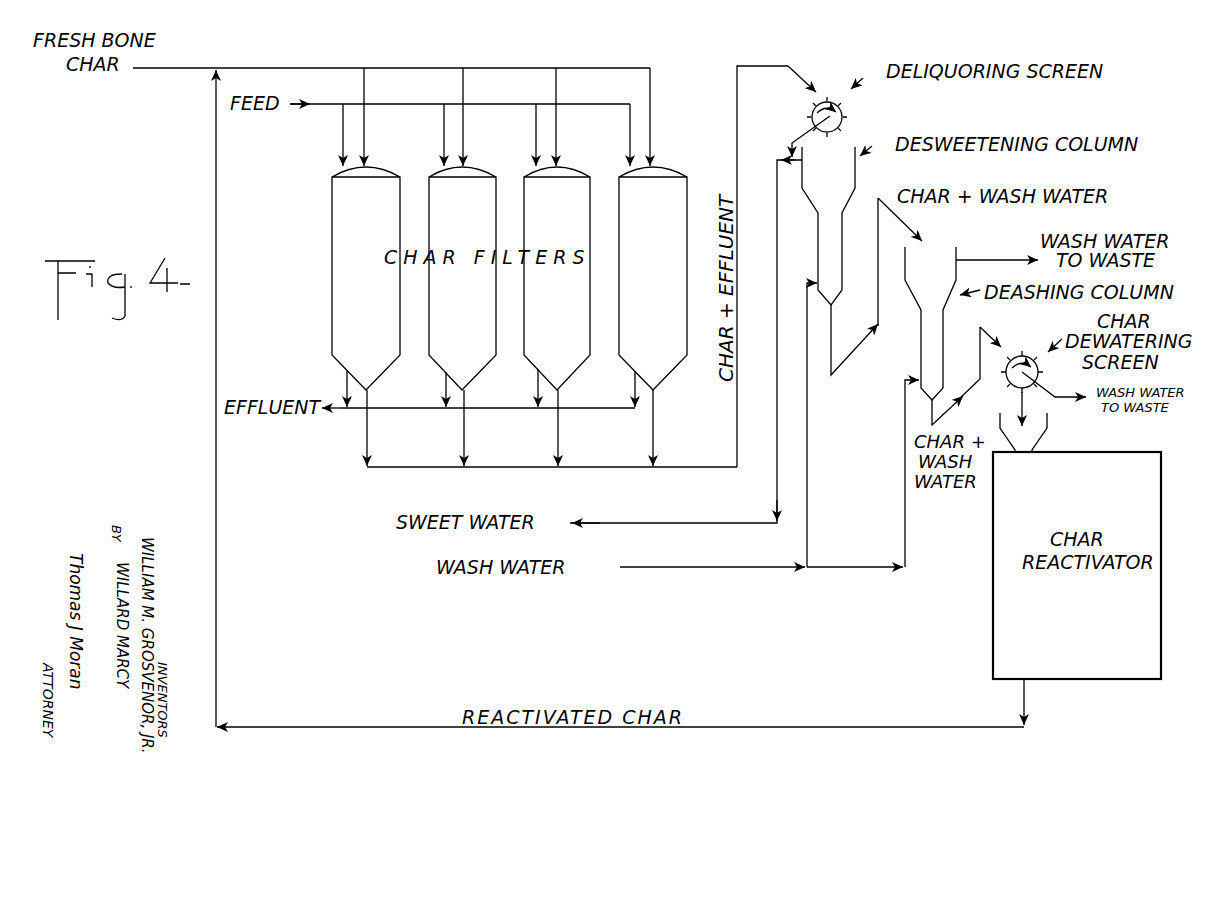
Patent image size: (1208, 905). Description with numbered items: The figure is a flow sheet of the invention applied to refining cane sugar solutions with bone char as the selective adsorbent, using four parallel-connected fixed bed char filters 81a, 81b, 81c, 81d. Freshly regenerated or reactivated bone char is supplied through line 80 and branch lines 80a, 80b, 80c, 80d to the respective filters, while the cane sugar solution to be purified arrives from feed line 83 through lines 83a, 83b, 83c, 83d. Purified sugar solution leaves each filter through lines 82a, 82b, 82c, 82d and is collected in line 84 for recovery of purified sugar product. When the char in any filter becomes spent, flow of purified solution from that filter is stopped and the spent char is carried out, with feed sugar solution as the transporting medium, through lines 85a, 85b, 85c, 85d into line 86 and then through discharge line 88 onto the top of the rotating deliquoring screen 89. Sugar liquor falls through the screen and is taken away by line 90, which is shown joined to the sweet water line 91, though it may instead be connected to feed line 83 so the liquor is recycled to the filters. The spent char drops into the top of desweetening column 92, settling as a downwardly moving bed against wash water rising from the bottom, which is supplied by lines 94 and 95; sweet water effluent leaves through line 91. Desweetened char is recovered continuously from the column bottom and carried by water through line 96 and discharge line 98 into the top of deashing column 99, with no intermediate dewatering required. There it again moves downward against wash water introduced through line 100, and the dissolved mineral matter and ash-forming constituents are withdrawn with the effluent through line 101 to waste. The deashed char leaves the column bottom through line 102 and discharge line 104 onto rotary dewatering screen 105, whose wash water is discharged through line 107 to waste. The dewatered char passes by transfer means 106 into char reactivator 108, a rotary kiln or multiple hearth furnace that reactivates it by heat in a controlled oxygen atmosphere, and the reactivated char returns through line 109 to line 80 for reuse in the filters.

The line 80 is at (170, 68).
The line 80a is at (364, 86).
The line 80b is at (463, 86).
The line 80c is at (556, 86).
The line 80d is at (650, 86).
The fixed bed char filter 81a is at (332, 193).
The fixed bed char filter 81b is at (429, 193).
The fixed bed char filter 81c is at (524, 193).
The fixed bed char filter 81d is at (619, 193).
The line 82a is at (347, 388).
The line 82b is at (446, 388).
The line 82c is at (538, 388).
The line 82d is at (635, 388).
The feed line 83 is at (344, 105).
The line 83a is at (343, 127).
The line 83b is at (444, 127).
The line 83c is at (536, 127).
The line 83d is at (630, 127).
The line 84 is at (334, 412).
The line 85a is at (367, 437).
The line 85b is at (464, 437).
The line 85c is at (558, 437).
The line 85d is at (653, 437).
The line 86 is at (695, 467).
The discharge line 88 is at (803, 76).
The deliquoring screen 89 is at (845, 114).
The line 90 is at (802, 137).
The line 91 is at (790, 164).
The desweetening column 92 is at (855, 172).
The line 94 is at (700, 567).
The line 95 is at (808, 416).
The line 96 is at (831, 325).
The discharge line 98 is at (913, 227).
The deashing column 99 is at (943, 320).
The line 100 is at (905, 448).
The line 101 is at (990, 257).
The line 102 is at (956, 416).
The discharge line 104 is at (990, 334).
The dewatering screen 105 is at (1040, 392).
The transfer means 106 is at (1040, 430).
The line 107 is at (1058, 400).
The char reactivator 108 is at (1161, 462).
The line 109 is at (880, 727).